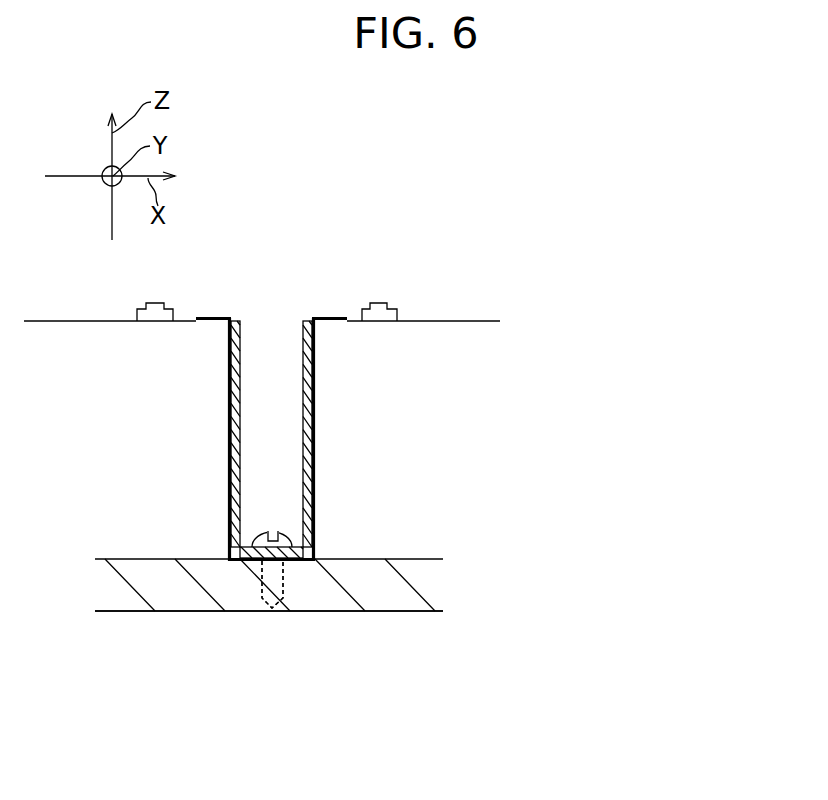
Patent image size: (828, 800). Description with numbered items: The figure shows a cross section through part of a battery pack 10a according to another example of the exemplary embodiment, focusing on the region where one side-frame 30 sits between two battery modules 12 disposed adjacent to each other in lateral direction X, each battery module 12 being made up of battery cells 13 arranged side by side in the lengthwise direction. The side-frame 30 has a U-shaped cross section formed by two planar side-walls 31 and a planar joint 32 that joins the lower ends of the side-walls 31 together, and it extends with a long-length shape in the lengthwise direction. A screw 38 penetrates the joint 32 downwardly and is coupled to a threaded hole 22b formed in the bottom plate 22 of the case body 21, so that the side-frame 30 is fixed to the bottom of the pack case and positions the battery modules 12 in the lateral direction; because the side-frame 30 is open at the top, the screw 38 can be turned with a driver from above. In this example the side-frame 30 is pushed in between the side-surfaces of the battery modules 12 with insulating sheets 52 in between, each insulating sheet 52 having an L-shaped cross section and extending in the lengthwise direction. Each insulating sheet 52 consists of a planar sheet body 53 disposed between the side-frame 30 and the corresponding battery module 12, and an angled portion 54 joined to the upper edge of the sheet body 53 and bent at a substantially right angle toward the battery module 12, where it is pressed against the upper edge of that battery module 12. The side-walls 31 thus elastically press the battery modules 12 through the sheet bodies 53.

The battery pack 10a is at (413, 243).
The battery module 12 is at (80, 320).
The battery cell 13 is at (422, 321).
The case body 21 is at (178, 613).
The bottom plate 22 is at (215, 612).
The threaded hole 22b is at (270, 611).
The side-frame 30 is at (293, 471).
The side-wall 31 is at (240, 403).
The joint 32 is at (303, 560).
The screw 38 is at (285, 540).
The insulating sheet 52 is at (228, 373).
The sheet body 53 is at (315, 407).
The angled portion 54 is at (333, 317).